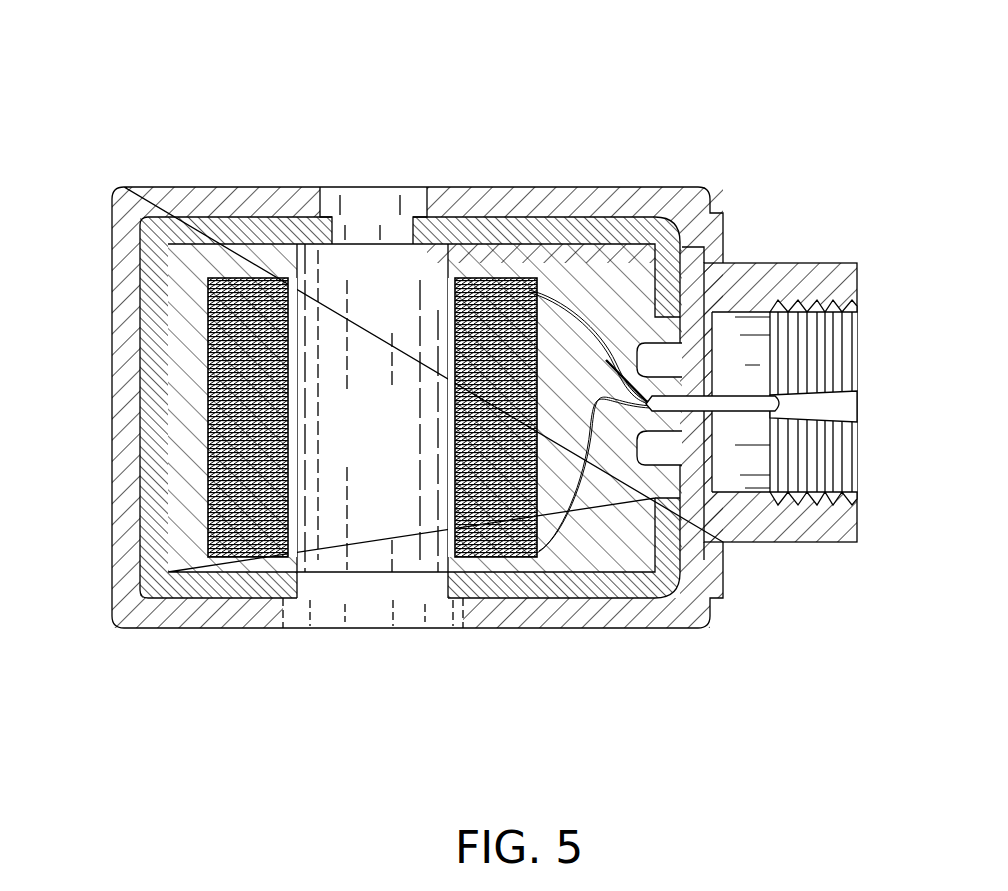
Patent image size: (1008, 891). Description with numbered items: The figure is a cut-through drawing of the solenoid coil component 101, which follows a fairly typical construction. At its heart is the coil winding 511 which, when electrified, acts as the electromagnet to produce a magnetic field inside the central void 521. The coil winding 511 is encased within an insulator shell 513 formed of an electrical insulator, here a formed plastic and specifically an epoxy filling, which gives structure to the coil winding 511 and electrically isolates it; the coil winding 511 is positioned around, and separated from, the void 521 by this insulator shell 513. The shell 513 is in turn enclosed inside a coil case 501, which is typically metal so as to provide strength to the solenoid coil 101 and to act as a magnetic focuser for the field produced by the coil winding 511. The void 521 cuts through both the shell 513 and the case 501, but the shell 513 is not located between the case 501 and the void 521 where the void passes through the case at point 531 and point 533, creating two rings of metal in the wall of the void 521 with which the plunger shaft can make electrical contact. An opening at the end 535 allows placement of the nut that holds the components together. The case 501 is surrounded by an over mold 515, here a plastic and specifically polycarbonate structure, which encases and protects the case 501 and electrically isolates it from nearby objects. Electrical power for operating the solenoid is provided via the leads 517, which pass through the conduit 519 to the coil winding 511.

The solenoid coil component 101 is at (714, 55).
The coil case 501 is at (340, 230).
The coil winding 511 is at (210, 323).
The insulator shell 513 is at (629, 283).
The over mold 515 is at (158, 203).
The leads 517 is at (740, 407).
The conduit 519 is at (827, 285).
The void 521 is at (328, 530).
The point 531 is at (355, 578).
The point 533 is at (365, 282).
The end 535 is at (373, 210).